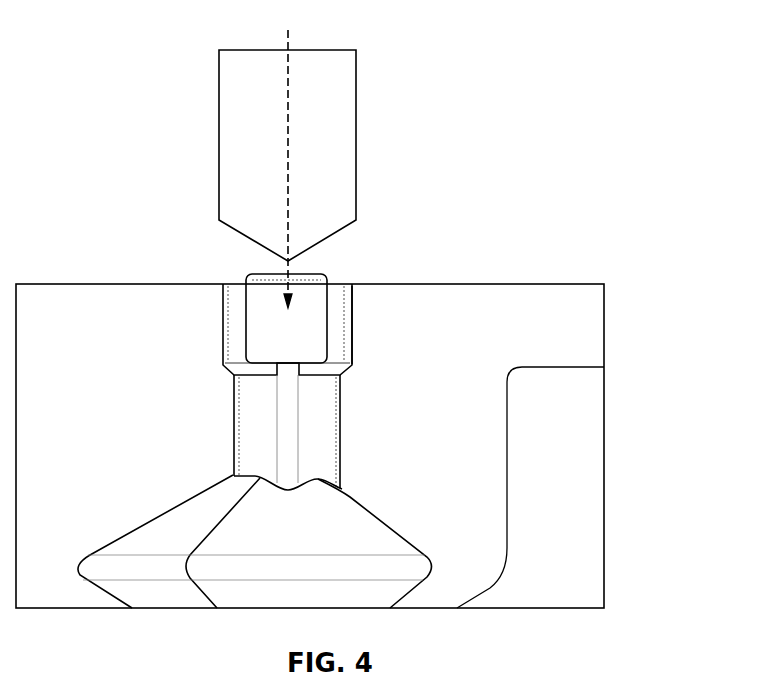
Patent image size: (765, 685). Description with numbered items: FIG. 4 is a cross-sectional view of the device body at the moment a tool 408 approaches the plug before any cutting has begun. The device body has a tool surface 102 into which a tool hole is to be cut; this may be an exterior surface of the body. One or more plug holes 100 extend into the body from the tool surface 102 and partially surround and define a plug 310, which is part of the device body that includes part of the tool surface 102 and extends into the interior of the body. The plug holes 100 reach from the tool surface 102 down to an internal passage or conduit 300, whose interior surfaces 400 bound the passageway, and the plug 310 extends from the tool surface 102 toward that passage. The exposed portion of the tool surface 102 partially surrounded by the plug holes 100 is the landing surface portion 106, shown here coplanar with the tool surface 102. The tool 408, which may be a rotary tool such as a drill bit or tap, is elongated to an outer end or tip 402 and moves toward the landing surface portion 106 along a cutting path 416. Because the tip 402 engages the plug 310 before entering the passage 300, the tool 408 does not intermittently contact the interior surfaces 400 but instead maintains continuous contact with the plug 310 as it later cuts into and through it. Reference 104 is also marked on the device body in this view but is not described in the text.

The plug hole 100 is at (347, 345).
The tool surface 102 is at (131, 284).
The mold block portion with channel 104 is at (604, 314).
The landing surface portion 106 is at (306, 272).
The internal passage or conduit 300 is at (310, 431).
The plug 310 is at (272, 330).
The interior surfaces 400 is at (228, 330).
The outer end or tip 402 is at (286, 265).
The tool 408 is at (327, 122).
The cutting path 416 is at (288, 207).